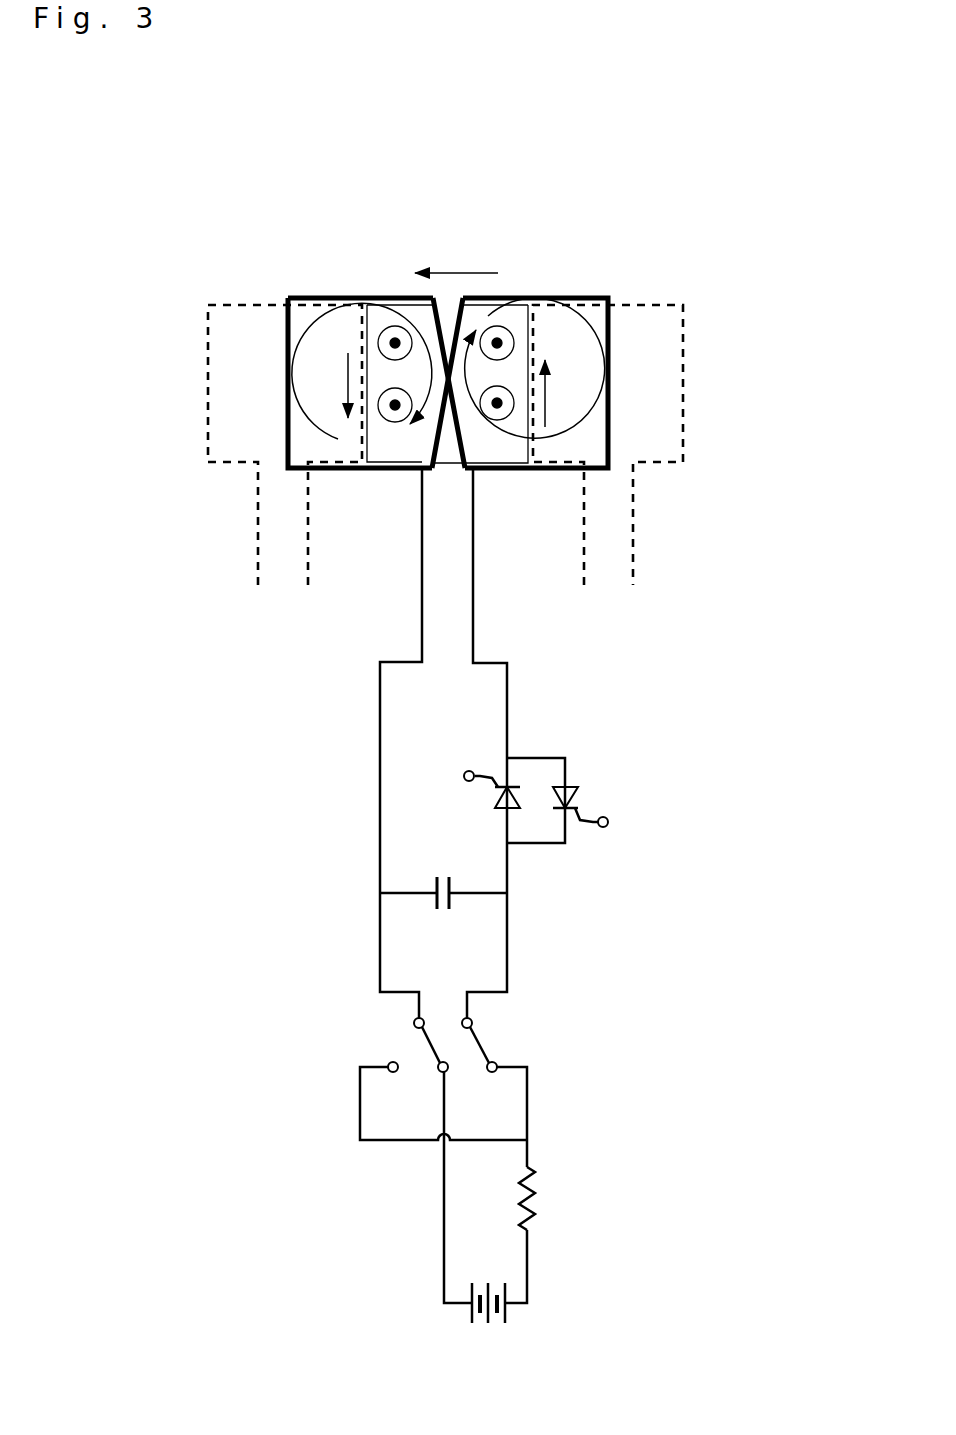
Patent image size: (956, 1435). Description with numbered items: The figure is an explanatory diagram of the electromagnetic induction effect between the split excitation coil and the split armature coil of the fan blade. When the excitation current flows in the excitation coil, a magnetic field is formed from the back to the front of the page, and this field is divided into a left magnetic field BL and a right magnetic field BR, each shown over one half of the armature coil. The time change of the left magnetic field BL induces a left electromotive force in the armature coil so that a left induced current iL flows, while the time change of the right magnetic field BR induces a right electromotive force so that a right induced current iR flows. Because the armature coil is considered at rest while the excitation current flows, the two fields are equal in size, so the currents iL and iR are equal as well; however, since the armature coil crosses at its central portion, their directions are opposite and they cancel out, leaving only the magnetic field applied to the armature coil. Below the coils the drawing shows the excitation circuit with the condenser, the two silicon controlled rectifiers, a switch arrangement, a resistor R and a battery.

The left magnetic field BL is at (407, 317).
The right magnetic field BR is at (500, 312).
The left induced current iL is at (292, 393).
The right induced current iR is at (593, 407).
The resistor R is at (540, 1198).